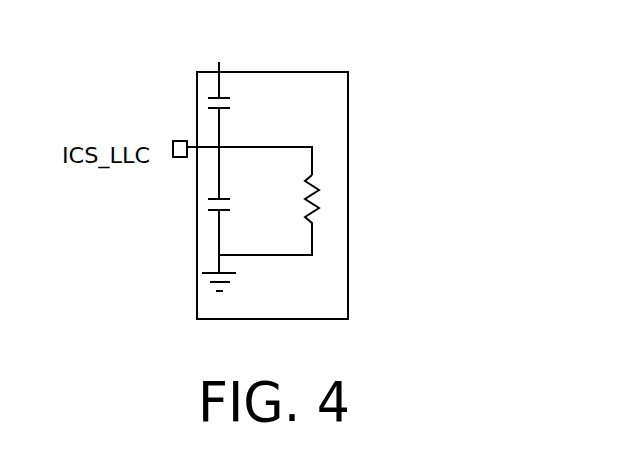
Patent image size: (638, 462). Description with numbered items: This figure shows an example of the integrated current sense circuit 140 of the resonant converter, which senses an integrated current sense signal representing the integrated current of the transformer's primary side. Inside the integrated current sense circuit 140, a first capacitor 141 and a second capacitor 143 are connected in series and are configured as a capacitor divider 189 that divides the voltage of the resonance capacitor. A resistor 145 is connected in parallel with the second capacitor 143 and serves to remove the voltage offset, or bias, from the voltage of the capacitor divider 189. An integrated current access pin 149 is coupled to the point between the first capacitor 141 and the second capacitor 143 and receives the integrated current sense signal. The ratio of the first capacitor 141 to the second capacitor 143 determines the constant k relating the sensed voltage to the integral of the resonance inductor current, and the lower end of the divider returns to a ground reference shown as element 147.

The integrated current sense circuit 140 is at (317, 71).
The first capacitor 141 is at (226, 98).
The second capacitor 143 is at (210, 200).
The resistor 145 is at (313, 182).
The ground 147 is at (212, 282).
The integrated current access pin 149 is at (173, 140).
The capacitor divider 189 is at (209, 135).